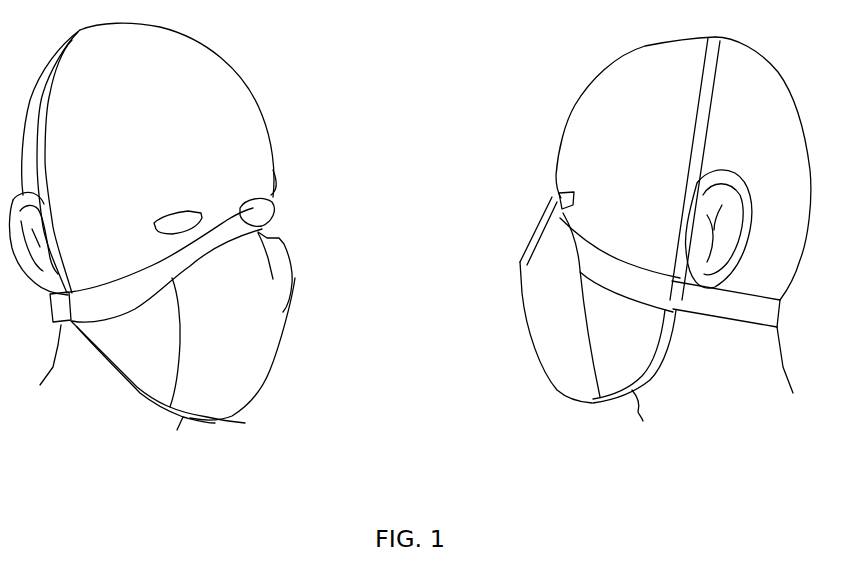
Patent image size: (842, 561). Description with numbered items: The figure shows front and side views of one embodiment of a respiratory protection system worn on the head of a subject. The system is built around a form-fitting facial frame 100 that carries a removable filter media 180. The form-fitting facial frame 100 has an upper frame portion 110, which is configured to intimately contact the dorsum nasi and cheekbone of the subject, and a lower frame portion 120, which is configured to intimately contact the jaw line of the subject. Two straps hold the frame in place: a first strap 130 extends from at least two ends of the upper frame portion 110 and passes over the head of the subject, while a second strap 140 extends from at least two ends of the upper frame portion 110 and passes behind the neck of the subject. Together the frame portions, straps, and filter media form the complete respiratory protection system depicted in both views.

The form-fitting facial frame 100 is at (500, 253).
The upper frame portion 110 is at (577, 241).
The lower frame portion 120 is at (170, 411).
The first strap 130 is at (40, 133).
The second strap 140 is at (741, 311).
The removable filter media 180 is at (553, 327).